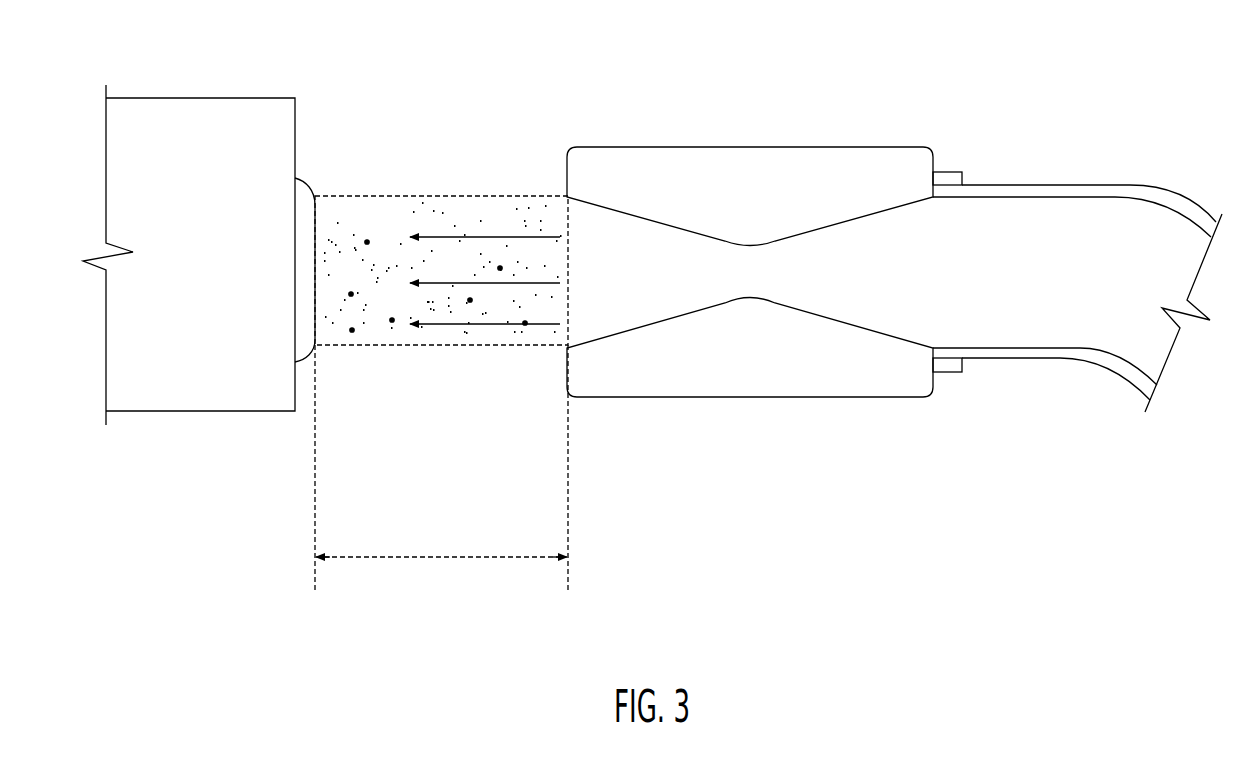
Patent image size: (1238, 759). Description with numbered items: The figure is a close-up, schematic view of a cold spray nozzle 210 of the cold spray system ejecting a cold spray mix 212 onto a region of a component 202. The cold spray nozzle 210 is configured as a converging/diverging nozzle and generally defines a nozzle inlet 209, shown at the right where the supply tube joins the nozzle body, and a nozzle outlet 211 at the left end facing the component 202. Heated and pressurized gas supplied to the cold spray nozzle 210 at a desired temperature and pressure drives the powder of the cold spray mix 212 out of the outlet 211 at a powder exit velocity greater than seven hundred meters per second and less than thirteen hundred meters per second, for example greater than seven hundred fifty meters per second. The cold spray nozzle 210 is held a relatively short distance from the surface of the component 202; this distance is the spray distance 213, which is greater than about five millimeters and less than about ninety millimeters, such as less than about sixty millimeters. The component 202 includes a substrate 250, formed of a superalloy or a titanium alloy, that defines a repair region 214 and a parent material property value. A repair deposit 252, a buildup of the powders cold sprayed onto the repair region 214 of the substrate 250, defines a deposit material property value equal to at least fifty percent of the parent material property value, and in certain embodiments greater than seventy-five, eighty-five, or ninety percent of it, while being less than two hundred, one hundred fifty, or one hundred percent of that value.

The component 202 is at (198, 118).
The nozzle inlet 209 is at (943, 253).
The cold spray nozzle 210 is at (755, 147).
The nozzle outlet 211 is at (558, 220).
The cold spray mix 212 is at (408, 188).
The spray distance 213 is at (440, 557).
The repair region 214 is at (307, 177).
The substrate 250 is at (253, 315).
The repair deposit 252 is at (315, 340).